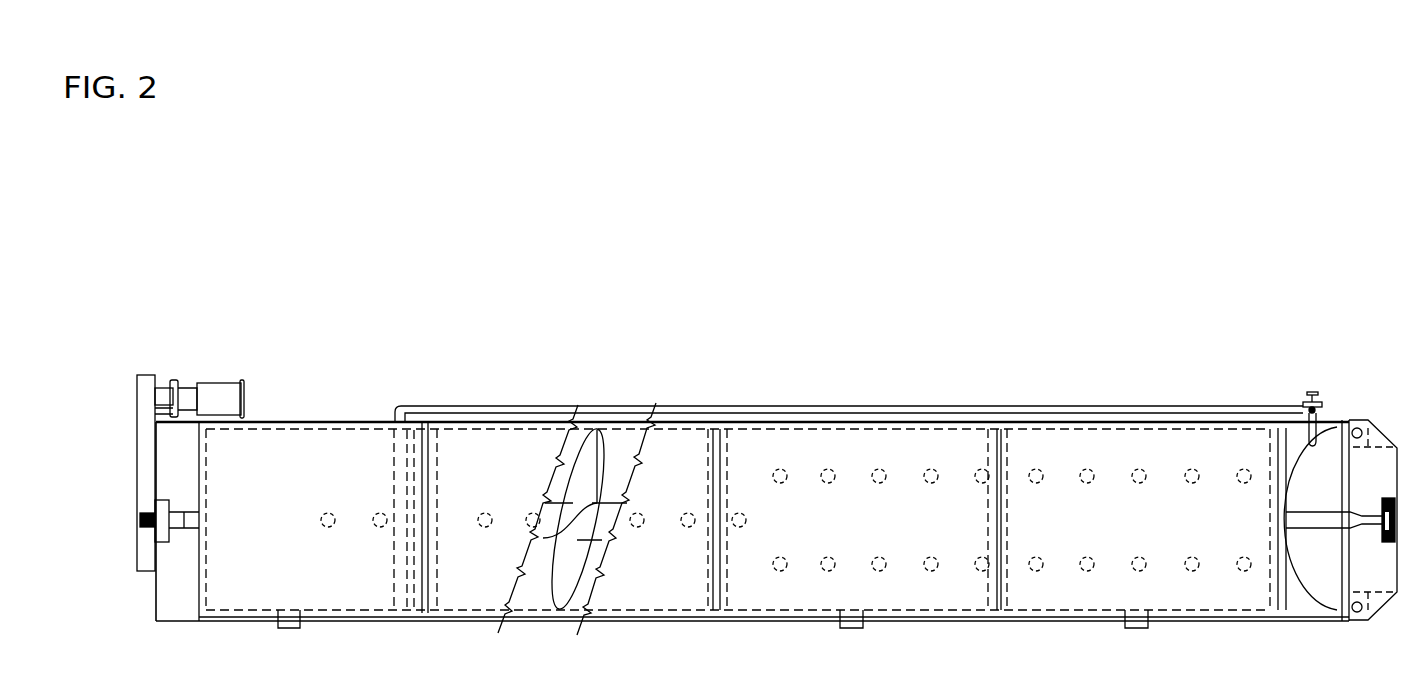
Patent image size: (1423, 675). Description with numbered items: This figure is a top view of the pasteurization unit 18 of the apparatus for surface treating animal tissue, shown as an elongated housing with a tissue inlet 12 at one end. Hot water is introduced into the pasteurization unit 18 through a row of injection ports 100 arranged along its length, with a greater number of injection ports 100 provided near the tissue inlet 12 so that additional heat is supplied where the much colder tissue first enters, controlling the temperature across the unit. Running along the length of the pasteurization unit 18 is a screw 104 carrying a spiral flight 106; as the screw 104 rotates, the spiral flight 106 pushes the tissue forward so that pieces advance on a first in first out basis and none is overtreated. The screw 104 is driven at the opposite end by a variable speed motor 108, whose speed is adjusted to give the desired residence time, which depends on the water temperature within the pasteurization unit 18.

The tissue inlet 12 is at (1257, 361).
The pasteurization unit 18 is at (327, 381).
The injection ports 100 is at (827, 470).
The screw 104 is at (603, 513).
The spiral flight 106 is at (597, 503).
The variable speed motor 108 is at (143, 473).